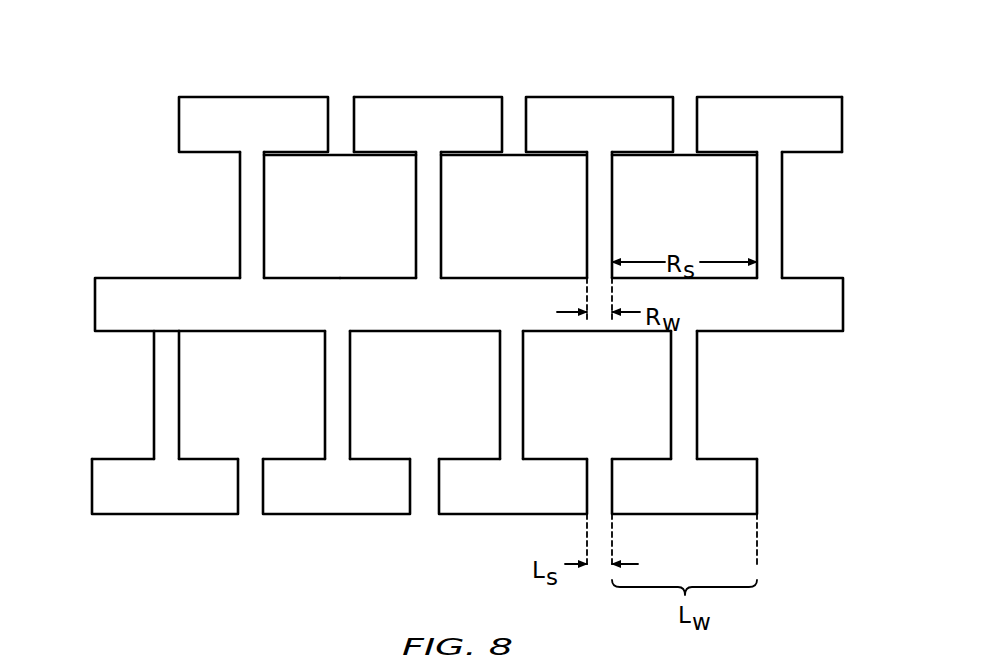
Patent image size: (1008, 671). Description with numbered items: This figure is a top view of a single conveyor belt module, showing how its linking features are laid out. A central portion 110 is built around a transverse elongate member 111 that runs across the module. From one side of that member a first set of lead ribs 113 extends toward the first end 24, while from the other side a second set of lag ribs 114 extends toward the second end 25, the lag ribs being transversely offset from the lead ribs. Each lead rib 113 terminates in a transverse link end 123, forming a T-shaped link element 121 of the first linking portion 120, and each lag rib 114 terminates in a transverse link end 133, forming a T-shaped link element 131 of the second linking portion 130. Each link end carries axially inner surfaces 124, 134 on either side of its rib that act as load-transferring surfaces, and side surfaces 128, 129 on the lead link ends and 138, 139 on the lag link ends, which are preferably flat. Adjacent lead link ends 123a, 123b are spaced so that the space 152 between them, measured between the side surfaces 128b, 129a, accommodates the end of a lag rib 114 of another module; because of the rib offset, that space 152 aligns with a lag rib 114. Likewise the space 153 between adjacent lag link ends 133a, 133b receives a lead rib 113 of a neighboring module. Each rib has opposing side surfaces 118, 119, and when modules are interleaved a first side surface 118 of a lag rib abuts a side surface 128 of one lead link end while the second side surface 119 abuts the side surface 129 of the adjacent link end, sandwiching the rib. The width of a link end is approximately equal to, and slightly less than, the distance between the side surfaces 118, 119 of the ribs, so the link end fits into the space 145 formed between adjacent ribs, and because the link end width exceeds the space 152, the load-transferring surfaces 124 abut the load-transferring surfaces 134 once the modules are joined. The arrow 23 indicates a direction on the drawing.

The direction arrow 23 is at (876, 457).
The first end 24 is at (790, 520).
The second end 25 is at (853, 95).
The central portion 110 is at (85, 212).
The transverse elongate member 111 is at (828, 317).
The lead ribs 113 is at (328, 368).
The lag ribs 114 is at (416, 208).
The first side surface 118 is at (633, 233).
The second side surface 119 is at (757, 233).
The first linking portion 120 is at (78, 417).
The T-shaped link element 121 is at (138, 445).
The link end 123 is at (455, 503).
The link end 123a is at (138, 505).
The link end 123b is at (295, 505).
The inner surface 124 is at (210, 457).
The side surface 128 is at (88, 497).
The side surface 128b is at (252, 457).
The side surface 129 is at (410, 505).
The side surface 129a is at (240, 507).
The second linking portion 130 is at (143, 93).
The T-shaped link element 131 is at (213, 168).
The link end 133 is at (585, 103).
The link end 133a is at (247, 105).
The link end 133b is at (443, 105).
The inner surface 134 is at (283, 155).
The side surface 138 is at (167, 100).
The side surface 139 is at (337, 100).
The space 145 is at (535, 229).
The space 152 is at (271, 573).
The space 153 is at (350, 103).